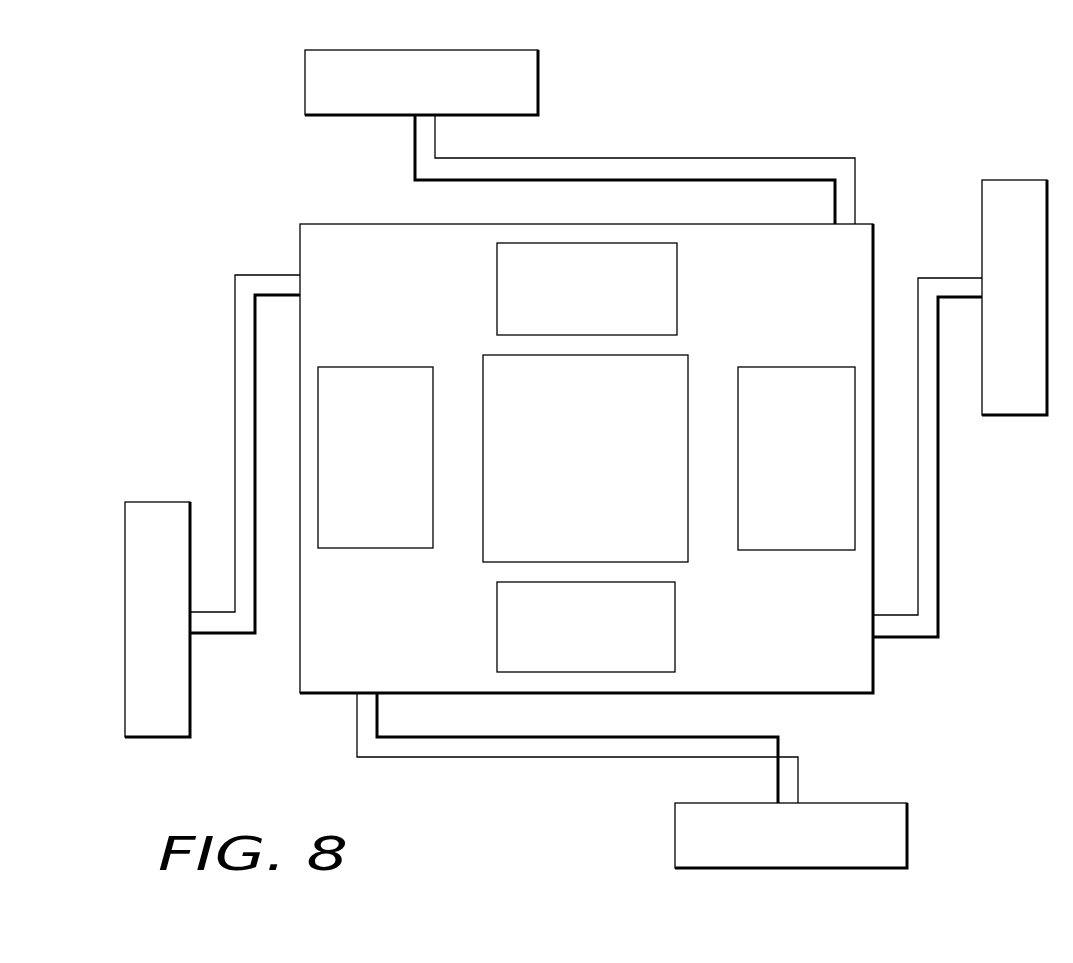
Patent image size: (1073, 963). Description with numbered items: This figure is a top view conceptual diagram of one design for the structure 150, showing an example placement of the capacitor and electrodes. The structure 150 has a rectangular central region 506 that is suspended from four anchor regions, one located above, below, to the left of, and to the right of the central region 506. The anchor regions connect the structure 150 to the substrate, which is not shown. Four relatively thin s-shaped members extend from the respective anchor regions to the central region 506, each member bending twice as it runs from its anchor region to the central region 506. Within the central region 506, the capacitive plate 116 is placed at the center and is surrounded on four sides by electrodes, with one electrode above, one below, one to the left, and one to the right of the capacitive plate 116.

The structure 150 is at (936, 83).
The capacitive plate 116 is at (603, 451).
The central region 506 is at (349, 236).